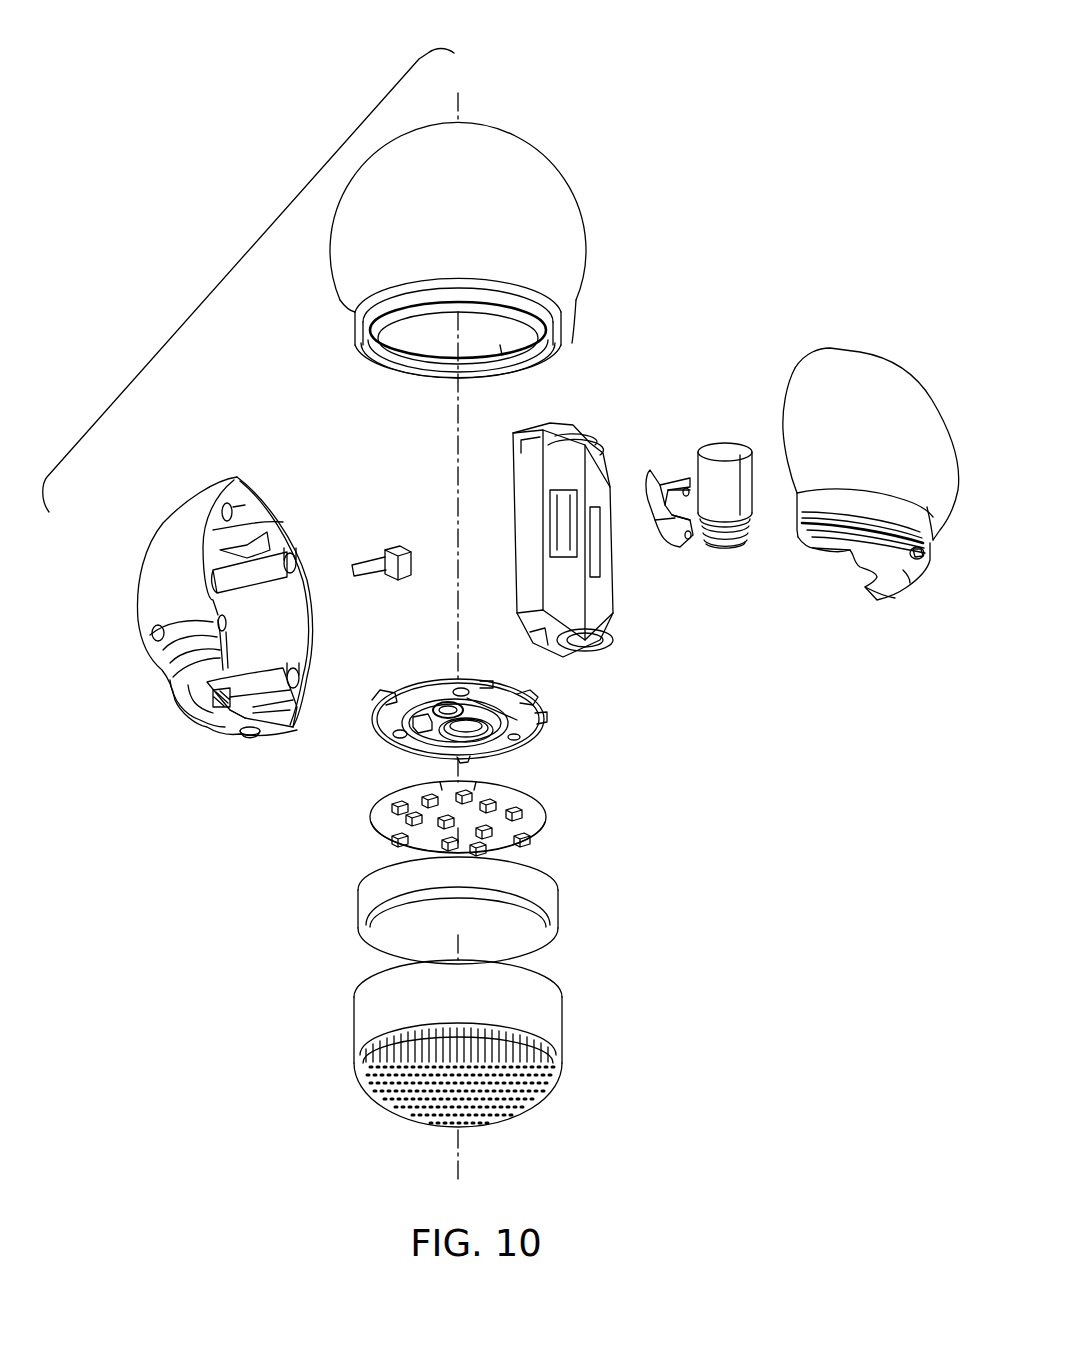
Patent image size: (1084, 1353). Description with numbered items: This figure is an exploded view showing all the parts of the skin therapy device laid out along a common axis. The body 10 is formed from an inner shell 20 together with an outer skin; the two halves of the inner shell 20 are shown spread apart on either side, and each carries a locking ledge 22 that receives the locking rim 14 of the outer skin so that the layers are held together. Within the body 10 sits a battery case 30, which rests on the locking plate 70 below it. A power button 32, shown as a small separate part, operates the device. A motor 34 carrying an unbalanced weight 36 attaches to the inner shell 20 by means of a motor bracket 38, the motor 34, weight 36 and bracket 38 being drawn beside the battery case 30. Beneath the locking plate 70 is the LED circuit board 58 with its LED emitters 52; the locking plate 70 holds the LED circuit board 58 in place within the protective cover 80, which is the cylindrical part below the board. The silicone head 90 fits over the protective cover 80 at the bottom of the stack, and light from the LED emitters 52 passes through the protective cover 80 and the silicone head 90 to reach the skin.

The body 10 is at (226, 266).
The locking rim 14 is at (562, 345).
The inner shell 20 is at (858, 392).
The locking ledge 22 is at (905, 578).
The battery case 30 is at (583, 440).
The power button 32 is at (368, 580).
The motor 34 is at (720, 462).
The unbalanced weight 36 is at (735, 532).
The motor bracket 38 is at (672, 537).
The LED emitters 52 is at (540, 810).
The LED circuit board 58 is at (540, 832).
The locking plate 70 is at (552, 730).
The protective cover 80 is at (553, 896).
The silicone head 90 is at (551, 1022).